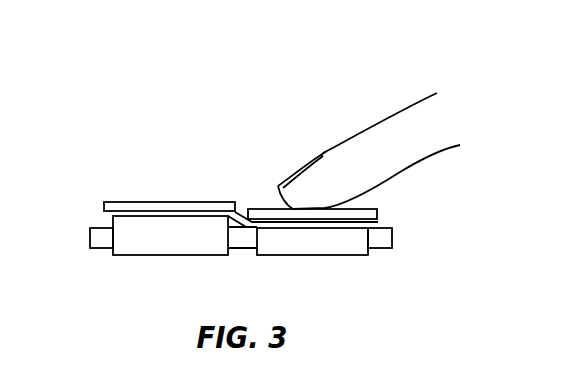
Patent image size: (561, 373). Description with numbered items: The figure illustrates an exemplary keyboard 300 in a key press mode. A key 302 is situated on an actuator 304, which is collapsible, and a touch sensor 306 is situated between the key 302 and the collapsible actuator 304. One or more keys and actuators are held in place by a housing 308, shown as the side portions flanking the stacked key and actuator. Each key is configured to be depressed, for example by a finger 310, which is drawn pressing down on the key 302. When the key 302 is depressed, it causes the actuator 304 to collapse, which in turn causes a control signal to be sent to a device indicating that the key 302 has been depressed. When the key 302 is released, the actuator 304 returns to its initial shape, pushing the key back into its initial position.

The keyboard 300 is at (150, 146).
The key 302 is at (380, 214).
The actuator 304 is at (310, 255).
The touch sensor 306 is at (379, 222).
The housing 308 is at (102, 248).
The finger 310 is at (350, 141).